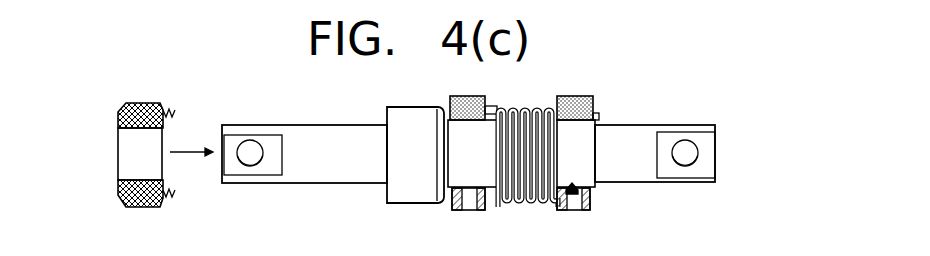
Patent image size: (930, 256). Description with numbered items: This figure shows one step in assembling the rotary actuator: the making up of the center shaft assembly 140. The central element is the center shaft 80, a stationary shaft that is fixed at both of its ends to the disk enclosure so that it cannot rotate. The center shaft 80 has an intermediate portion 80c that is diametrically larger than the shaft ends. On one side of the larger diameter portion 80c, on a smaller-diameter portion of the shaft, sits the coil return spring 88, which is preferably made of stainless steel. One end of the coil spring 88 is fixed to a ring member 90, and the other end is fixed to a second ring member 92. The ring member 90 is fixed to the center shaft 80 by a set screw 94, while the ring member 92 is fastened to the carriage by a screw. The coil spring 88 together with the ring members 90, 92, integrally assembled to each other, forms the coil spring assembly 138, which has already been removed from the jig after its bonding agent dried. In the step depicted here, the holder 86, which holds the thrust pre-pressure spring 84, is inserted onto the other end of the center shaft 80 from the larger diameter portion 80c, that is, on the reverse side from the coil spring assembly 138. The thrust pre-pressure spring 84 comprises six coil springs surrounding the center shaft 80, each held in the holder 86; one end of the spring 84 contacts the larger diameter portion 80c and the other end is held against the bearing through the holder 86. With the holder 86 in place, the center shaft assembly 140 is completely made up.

The center shaft 80 is at (344, 173).
The intermediate portion 80c is at (411, 120).
The thrust pre-pressure spring 84 is at (176, 111).
The spring holder 86 is at (143, 104).
The coil return spring 88 is at (539, 108).
The ring member 90 is at (591, 200).
The ring member 92 is at (456, 211).
The set screw 94 is at (571, 211).
The coil spring assembly 138 is at (504, 98).
The center shaft assembly 140 is at (645, 109).